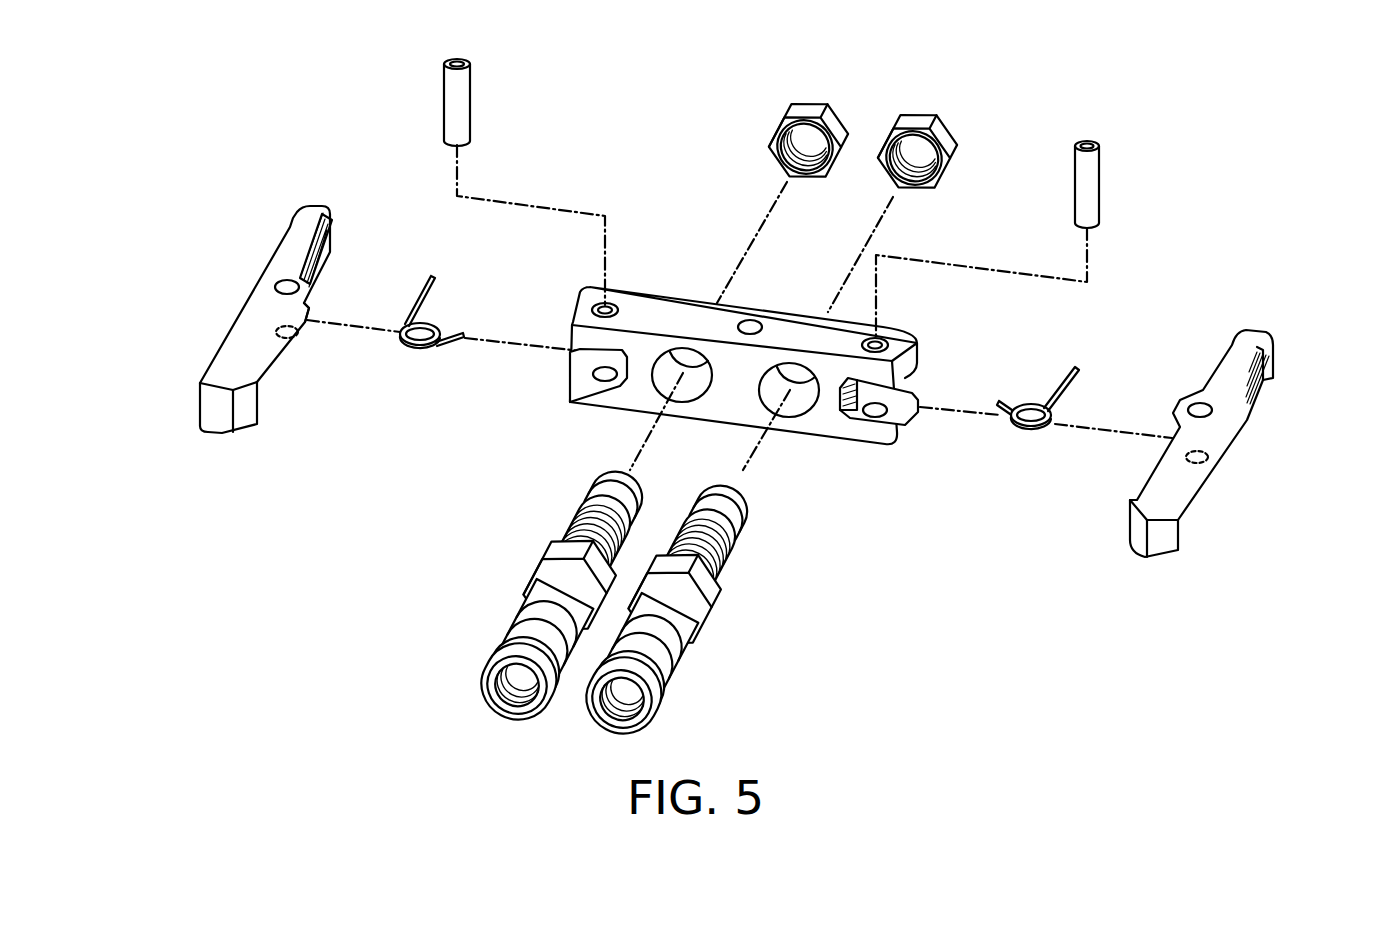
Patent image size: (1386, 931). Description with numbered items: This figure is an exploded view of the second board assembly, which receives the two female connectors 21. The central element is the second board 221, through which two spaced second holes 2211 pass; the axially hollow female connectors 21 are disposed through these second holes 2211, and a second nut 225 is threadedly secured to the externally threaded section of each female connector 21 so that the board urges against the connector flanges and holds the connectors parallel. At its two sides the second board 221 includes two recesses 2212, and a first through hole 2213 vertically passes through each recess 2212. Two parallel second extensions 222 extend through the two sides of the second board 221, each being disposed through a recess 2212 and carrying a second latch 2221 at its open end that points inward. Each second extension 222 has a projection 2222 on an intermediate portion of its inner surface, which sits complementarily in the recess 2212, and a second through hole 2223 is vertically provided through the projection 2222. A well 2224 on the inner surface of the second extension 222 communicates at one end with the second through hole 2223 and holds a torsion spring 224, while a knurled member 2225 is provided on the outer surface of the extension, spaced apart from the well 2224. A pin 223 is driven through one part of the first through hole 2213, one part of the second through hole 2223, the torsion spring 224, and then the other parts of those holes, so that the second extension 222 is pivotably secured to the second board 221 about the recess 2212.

The female connector 21 is at (488, 600).
The second board 221 is at (804, 331).
The second hole 2211 is at (800, 396).
The recess 2212 is at (895, 405).
The first through hole 2213 is at (880, 337).
The second extension 222 is at (249, 255).
The second latch 2221 is at (230, 388).
The projection 2222 is at (307, 302).
The second through hole 2223 is at (290, 287).
The well 2224 is at (327, 259).
The knurled member 2225 is at (1265, 396).
The pin 223 is at (1088, 178).
The torsion spring 224 is at (1040, 437).
The second nut 225 is at (941, 143).